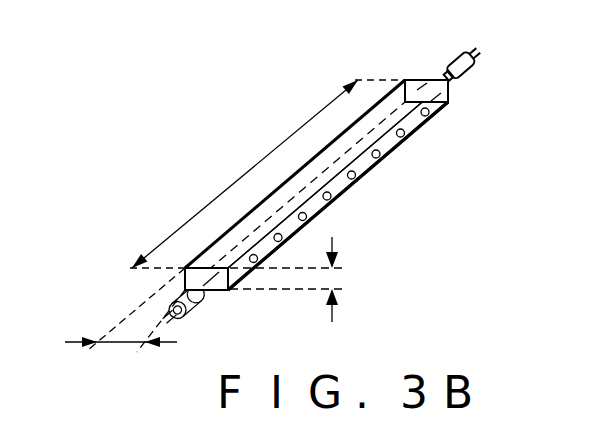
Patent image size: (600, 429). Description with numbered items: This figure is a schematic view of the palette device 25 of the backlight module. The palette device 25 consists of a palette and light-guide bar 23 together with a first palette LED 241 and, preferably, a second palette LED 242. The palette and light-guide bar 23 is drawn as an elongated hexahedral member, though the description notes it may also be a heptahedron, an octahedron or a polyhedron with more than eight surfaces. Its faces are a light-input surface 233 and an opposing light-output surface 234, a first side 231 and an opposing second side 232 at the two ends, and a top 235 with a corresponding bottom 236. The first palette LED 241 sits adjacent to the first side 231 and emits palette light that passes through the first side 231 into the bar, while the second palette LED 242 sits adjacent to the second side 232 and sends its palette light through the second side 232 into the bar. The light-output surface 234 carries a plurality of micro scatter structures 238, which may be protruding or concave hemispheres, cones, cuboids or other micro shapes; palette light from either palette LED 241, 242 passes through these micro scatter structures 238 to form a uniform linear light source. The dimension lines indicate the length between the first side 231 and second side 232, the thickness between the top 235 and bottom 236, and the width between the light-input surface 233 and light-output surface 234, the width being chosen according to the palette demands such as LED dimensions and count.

The palette device 25 is at (127, 84).
The palette and light-guide bar 23 is at (402, 47).
The first side 231 is at (226, 290).
The second side 232 is at (432, 68).
The light-input surface 233 is at (347, 124).
The light-output surface 234 is at (400, 141).
The top 235 is at (325, 178).
The bottom 236 is at (410, 115).
The micro scatter structures 238 is at (306, 216).
The first palette LED 241 is at (198, 298).
The second palette LED 242 is at (471, 69).